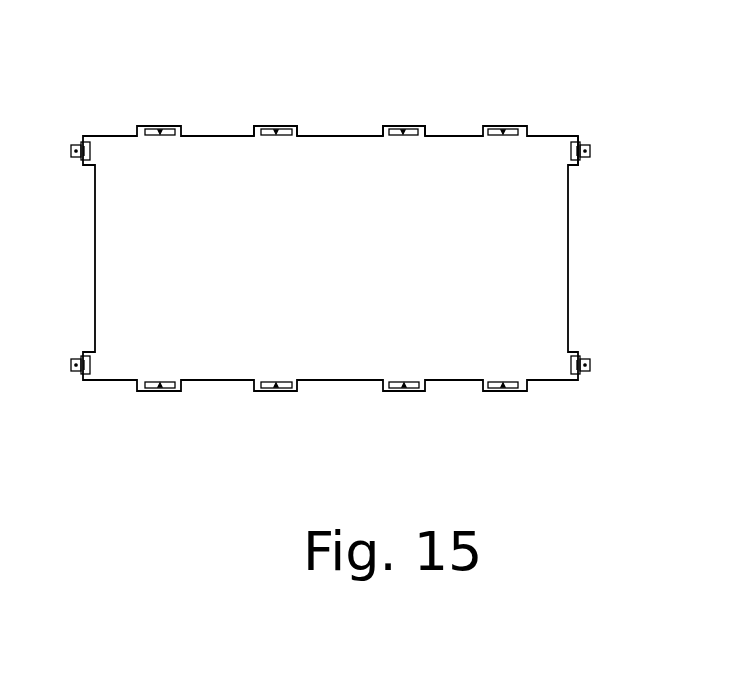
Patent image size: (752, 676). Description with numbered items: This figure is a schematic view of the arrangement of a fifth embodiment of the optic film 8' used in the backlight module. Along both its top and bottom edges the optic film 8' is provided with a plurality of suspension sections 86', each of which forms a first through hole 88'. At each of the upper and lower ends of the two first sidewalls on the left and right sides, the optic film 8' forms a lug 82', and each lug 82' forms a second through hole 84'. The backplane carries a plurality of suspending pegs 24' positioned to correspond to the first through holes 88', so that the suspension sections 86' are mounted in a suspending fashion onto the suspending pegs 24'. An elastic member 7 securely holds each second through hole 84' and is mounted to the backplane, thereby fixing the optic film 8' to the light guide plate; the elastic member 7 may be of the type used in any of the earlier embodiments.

The optic film 8' is at (314, 314).
The suspension section 86' is at (259, 89).
The first through hole 88' is at (290, 89).
The suspending peg 24' is at (421, 85).
The lug 82' is at (595, 112).
The second through hole 84' is at (623, 117).
The elastic member 7 is at (579, 160).